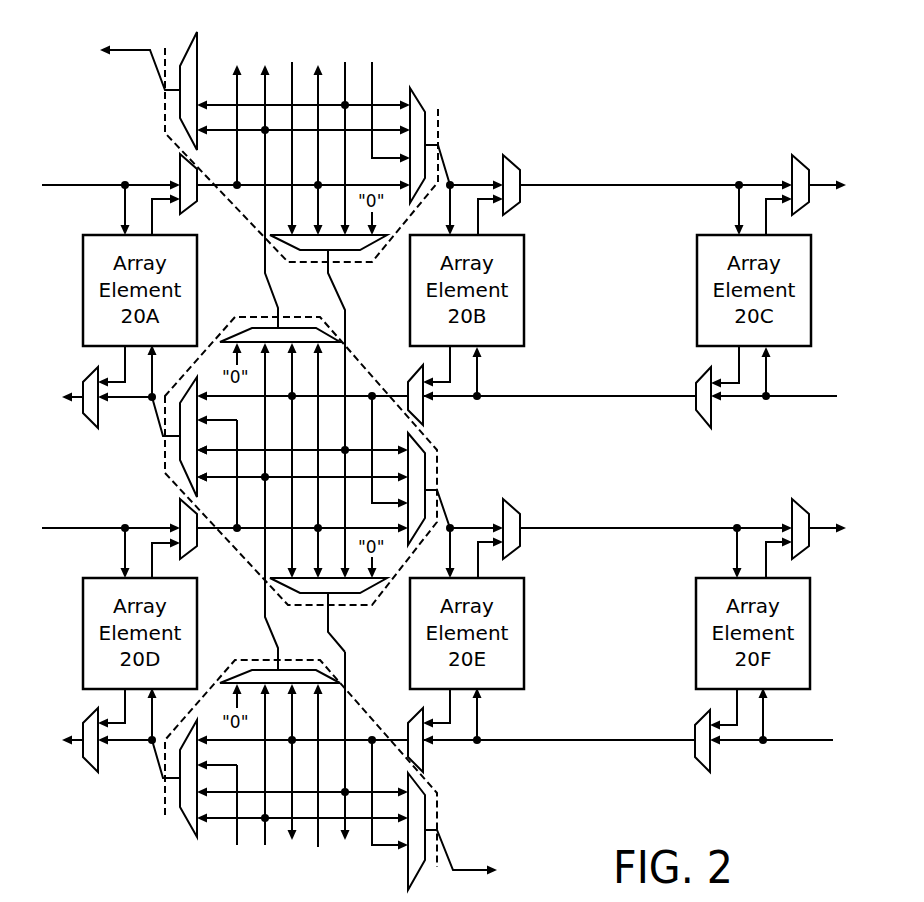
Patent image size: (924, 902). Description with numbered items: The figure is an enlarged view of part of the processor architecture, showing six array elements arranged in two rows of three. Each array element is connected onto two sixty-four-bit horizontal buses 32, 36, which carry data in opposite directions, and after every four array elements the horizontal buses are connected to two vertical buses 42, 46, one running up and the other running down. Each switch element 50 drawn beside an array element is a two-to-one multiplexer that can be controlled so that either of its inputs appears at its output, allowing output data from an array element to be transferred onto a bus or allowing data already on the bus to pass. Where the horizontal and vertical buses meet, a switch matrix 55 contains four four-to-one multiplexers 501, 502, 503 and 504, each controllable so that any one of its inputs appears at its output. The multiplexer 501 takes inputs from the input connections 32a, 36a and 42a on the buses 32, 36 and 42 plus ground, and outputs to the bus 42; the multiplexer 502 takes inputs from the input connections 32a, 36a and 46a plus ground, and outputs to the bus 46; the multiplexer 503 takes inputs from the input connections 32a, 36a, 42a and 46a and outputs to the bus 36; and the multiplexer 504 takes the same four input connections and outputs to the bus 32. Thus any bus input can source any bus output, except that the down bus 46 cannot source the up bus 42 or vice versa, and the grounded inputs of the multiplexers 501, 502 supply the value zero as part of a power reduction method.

The bus 32 is at (46, 186).
The bus 36 is at (62, 397).
The vertical bus 42 is at (266, 66).
The vertical bus 46 is at (346, 66).
The switch element 50 is at (514, 156).
The switch matrix 55 is at (443, 517).
The multiplexer 501 is at (258, 328).
The multiplexer 502 is at (344, 600).
The multiplexer 503 is at (180, 452).
The multiplexer 504 is at (426, 468).
The input connection 32a is at (203, 534).
The input connection 36a is at (381, 392).
The input connection 42a is at (263, 615).
The input connection 46a is at (348, 310).